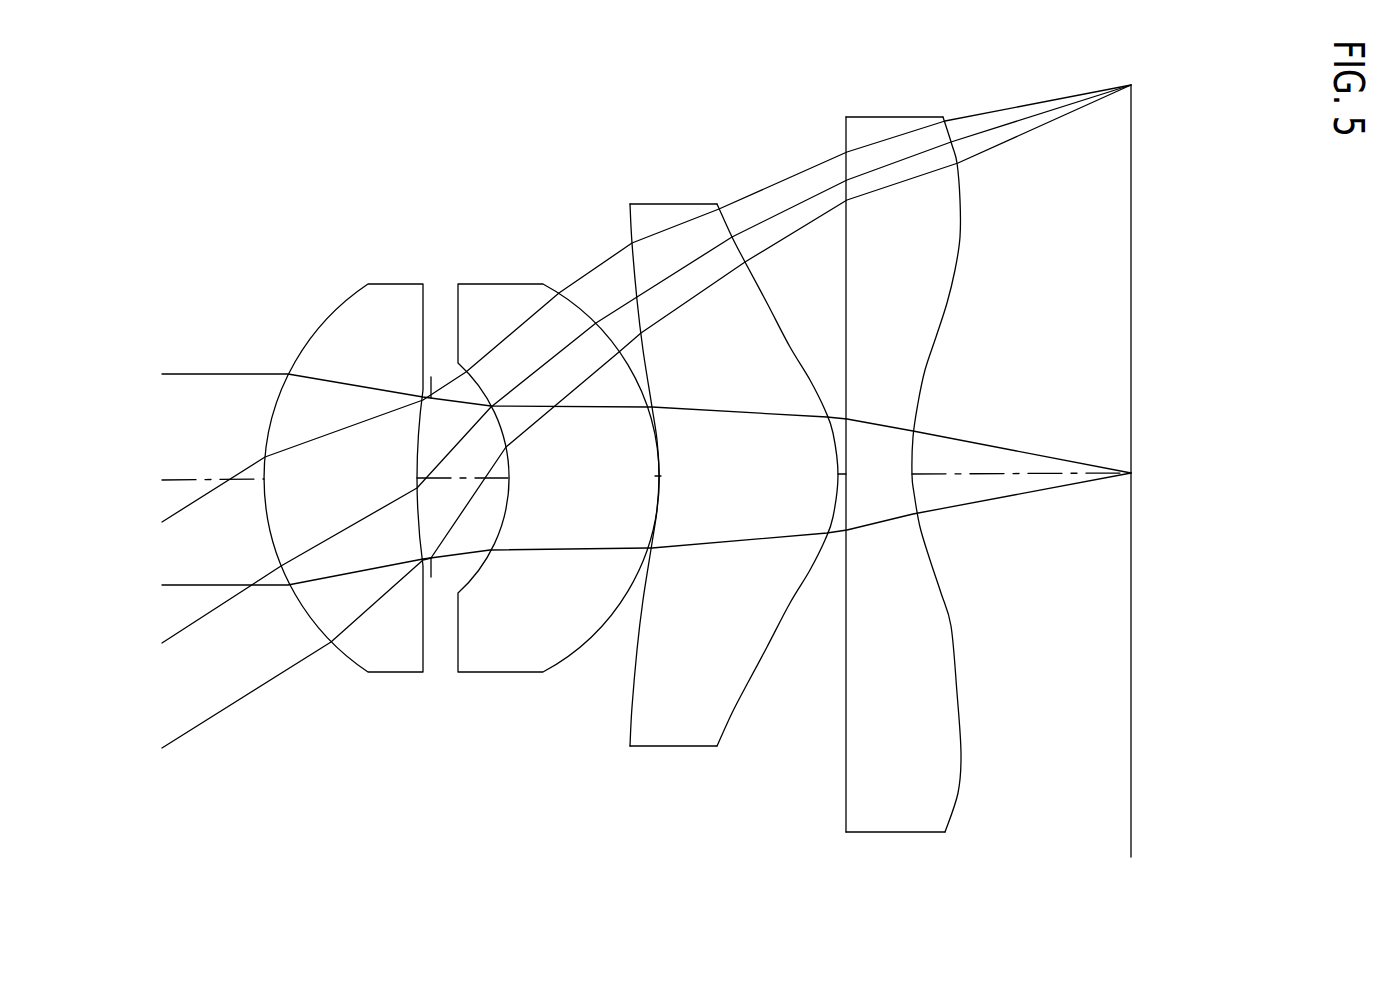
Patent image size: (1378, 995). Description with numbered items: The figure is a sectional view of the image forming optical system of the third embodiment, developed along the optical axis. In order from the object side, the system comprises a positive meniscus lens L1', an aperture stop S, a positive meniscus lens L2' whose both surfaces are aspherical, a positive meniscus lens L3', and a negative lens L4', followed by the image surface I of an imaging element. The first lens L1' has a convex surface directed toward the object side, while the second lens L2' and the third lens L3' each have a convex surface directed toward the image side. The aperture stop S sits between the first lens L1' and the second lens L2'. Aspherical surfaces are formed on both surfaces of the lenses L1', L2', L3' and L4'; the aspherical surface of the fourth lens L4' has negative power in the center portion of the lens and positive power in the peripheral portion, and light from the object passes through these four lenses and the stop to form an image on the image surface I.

The positive meniscus lens L1' is at (343, 412).
The aperture stop S is at (431, 377).
The positive meniscus lens L2' is at (543, 393).
The positive meniscus lens L3' is at (734, 416).
The negative lens L4' is at (903, 435).
The image surface I is at (1133, 212).